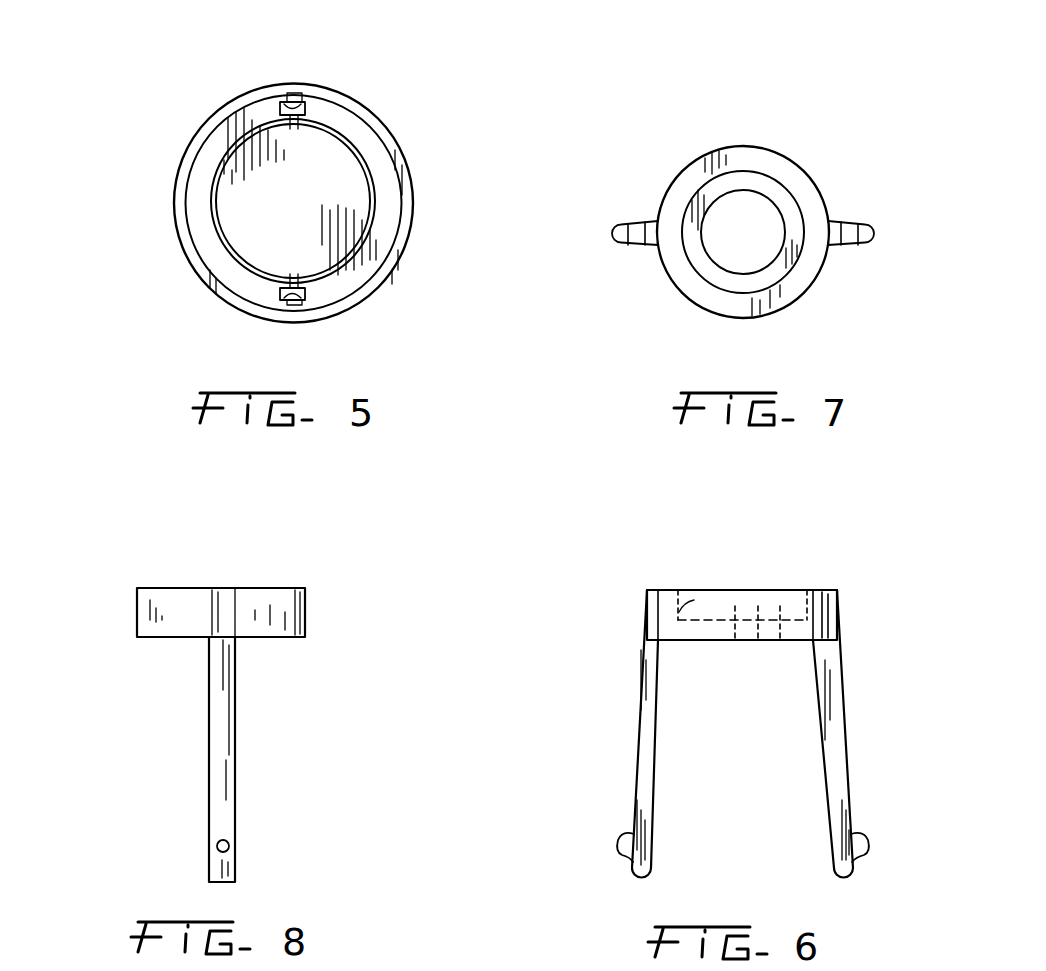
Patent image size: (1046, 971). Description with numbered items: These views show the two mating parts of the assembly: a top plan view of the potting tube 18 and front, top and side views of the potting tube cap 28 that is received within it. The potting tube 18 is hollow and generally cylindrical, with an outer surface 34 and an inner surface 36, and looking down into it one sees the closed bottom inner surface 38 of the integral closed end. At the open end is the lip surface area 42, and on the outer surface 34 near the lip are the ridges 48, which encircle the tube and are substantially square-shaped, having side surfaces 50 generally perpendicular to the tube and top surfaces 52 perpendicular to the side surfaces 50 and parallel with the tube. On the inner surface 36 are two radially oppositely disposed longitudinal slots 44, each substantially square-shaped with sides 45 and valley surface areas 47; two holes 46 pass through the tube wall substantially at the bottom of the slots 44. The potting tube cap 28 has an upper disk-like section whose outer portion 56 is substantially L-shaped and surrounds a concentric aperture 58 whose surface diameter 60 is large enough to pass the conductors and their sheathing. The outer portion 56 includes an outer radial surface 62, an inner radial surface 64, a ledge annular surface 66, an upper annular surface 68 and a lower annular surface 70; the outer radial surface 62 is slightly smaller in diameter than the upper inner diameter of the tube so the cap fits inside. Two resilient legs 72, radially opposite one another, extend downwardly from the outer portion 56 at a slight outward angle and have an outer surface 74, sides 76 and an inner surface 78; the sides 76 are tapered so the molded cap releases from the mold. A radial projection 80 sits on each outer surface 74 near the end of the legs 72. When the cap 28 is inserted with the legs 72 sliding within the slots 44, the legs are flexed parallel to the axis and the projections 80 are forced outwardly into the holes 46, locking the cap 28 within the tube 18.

In FIG. 5, the potting tube 18 is at (292, 190).
In FIG. 5, the outer surface 34 is at (298, 191).
In FIG. 5, the inner surface 36 is at (361, 163).
In FIG. 5, the closed bottom inner surface 38 is at (258, 227).
In FIG. 5, the lip surface area 42 is at (344, 195).
In FIG. 5, the longitudinal slots 44 is at (292, 190).
In FIG. 5, the sides 45 is at (297, 121).
In FIG. 5, the holes 46 is at (298, 97).
In FIG. 5, the valley surface areas 47 is at (302, 108).
In FIG. 5, the ridges 48 is at (274, 190).
In FIG. 5, the side surfaces 50 is at (188, 142).
In FIG. 5, the top surfaces 52 is at (221, 105).
In FIG. 7, the potting tube cap 28 is at (743, 190).
In FIG. 8, the potting tube cap 28 is at (223, 698).
In FIG. 6, the potting tube cap 28 is at (712, 707).
In FIG. 7, the outer portion 56 is at (740, 227).
In FIG. 8, the outer portion 56 is at (196, 615).
In FIG. 6, the outer portion 56 is at (724, 617).
In FIG. 7, the aperture 58 is at (728, 251).
In FIG. 6, the aperture 58 is at (744, 644).
In FIG. 7, the surface diameter 60 is at (722, 207).
In FIG. 6, the surface diameter 60 is at (703, 618).
In FIG. 7, the outer radial surface 62 is at (802, 303).
In FIG. 8, the outer radial surface 62 is at (295, 620).
In FIG. 6, the outer radial surface 62 is at (658, 613).
In FIG. 7, the inner radial surface 64 is at (728, 269).
In FIG. 6, the inner radial surface 64 is at (695, 607).
In FIG. 7, the ledge annular surface 66 is at (740, 182).
In FIG. 6, the ledge annular surface 66 is at (798, 618).
In FIG. 7, the upper annular surface 68 is at (677, 195).
In FIG. 8, the upper annular surface 68 is at (272, 588).
In FIG. 6, the upper annular surface 68 is at (669, 590).
In FIG. 8, the lower annular surface 70 is at (172, 638).
In FIG. 6, the lower annular surface 70 is at (804, 640).
In FIG. 7, the legs 72 is at (743, 248).
In FIG. 8, the legs 72 is at (251, 759).
In FIG. 6, the legs 72 is at (737, 750).
In FIG. 7, the outer surface 74 is at (632, 232).
In FIG. 8, the outer surface 74 is at (225, 750).
In FIG. 6, the outer surface 74 is at (643, 700).
In FIG. 7, the sides 76 is at (641, 224).
In FIG. 8, the sides 76 is at (212, 759).
In FIG. 6, the sides 76 is at (650, 738).
In FIG. 6, the inner surface 78 is at (655, 840).
In FIG. 7, the radial projection 80 is at (611, 236).
In FIG. 8, the radial projection 80 is at (216, 846).
In FIG. 6, the radial projection 80 is at (618, 849).